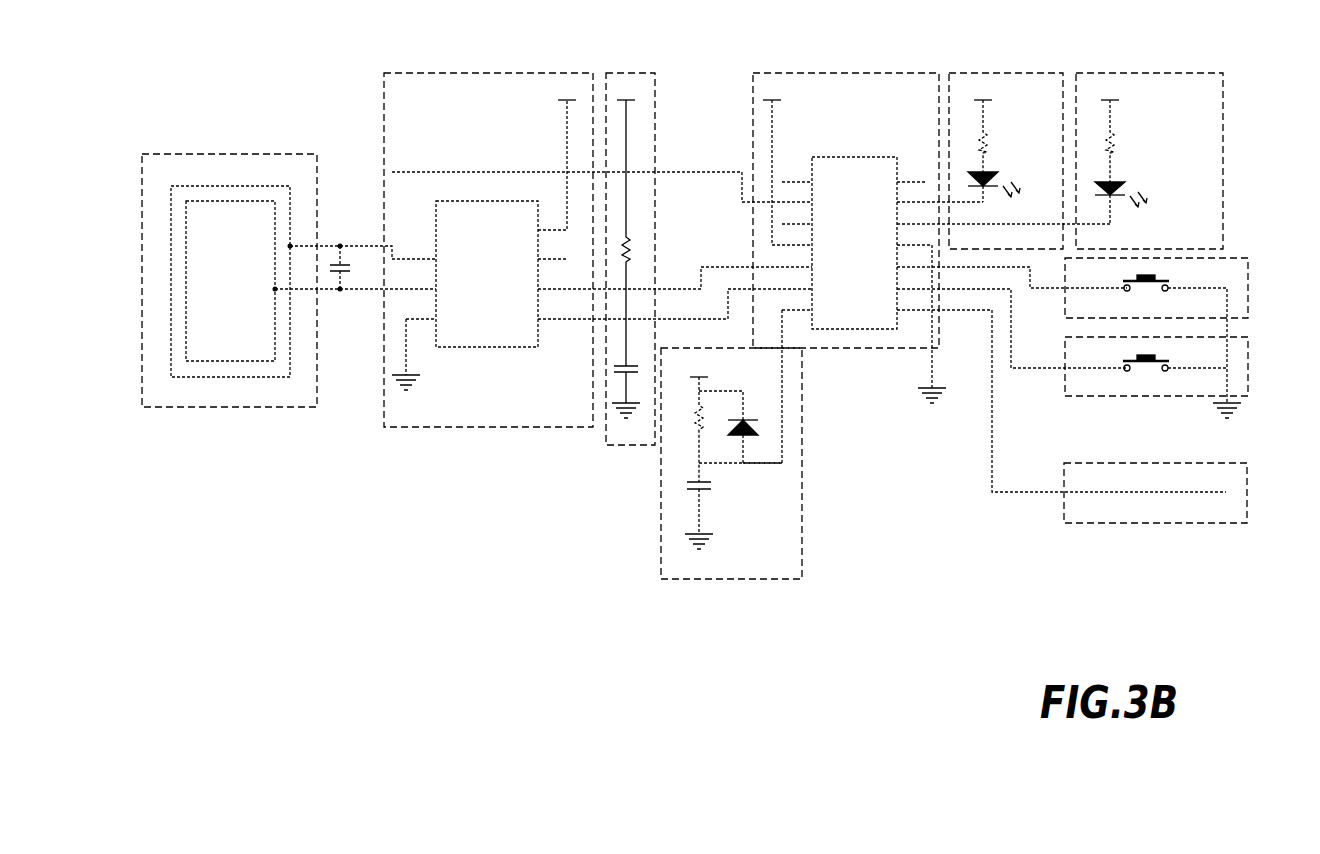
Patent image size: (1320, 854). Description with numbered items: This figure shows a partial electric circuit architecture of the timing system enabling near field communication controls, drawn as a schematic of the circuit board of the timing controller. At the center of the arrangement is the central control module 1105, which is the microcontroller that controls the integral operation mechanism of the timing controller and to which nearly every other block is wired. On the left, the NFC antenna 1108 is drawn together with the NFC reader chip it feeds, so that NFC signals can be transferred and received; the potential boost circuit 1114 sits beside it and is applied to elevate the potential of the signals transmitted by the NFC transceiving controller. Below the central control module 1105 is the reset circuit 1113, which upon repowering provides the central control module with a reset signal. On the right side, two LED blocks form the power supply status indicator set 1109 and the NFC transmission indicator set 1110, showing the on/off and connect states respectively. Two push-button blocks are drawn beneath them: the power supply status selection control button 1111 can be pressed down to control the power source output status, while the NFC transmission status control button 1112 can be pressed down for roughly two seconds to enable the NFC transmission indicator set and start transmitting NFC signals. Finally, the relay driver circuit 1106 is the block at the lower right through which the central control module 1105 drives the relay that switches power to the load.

The NFC antenna 1108 is at (230, 154).
The potential boost circuit 1114 is at (633, 73).
The central control module 1105 is at (840, 73).
The power supply status selection control button 1111 is at (1010, 73).
The NFC transmission status control button 1112 is at (1135, 73).
The power supply status indicator set 1109 is at (1249, 288).
The NFC transmission indicator set 1110 is at (1065, 383).
The relay driver circuit 1106 is at (1060, 507).
The reset circuit 1113 is at (661, 534).